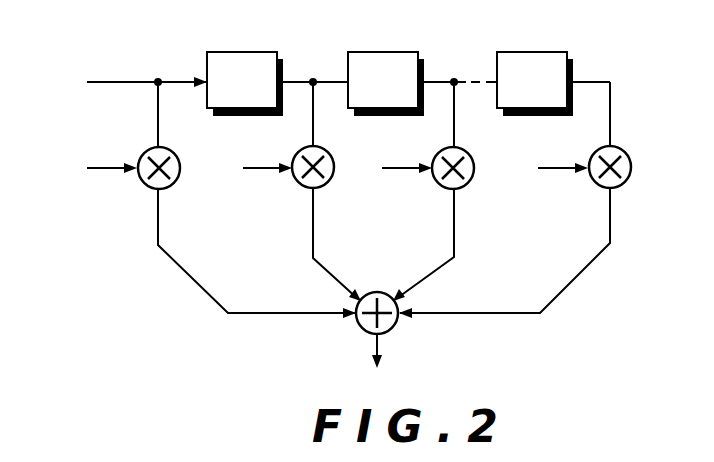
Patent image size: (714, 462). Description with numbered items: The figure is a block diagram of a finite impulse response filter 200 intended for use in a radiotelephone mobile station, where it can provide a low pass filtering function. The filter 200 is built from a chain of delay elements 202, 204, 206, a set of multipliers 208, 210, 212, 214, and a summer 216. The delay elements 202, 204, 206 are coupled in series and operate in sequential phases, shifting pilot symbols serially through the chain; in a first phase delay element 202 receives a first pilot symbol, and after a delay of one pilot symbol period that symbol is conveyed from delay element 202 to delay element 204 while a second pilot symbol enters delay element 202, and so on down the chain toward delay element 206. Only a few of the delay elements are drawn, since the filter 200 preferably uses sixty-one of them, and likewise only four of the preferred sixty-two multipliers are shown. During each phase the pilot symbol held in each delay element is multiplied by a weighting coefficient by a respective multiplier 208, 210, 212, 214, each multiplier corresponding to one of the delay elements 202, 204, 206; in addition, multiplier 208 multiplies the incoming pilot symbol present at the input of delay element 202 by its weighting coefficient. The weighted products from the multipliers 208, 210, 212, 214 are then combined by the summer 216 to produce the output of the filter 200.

The finite impulse response (FIR) filter 200 is at (73, 341).
The delay element 202 is at (235, 52).
The delay element 204 is at (373, 52).
The delay element 206 is at (522, 52).
The multiplier 208 is at (144, 152).
The multiplier 210 is at (300, 184).
The multiplier 212 is at (440, 152).
The multiplier 214 is at (596, 153).
The summer 216 is at (358, 328).